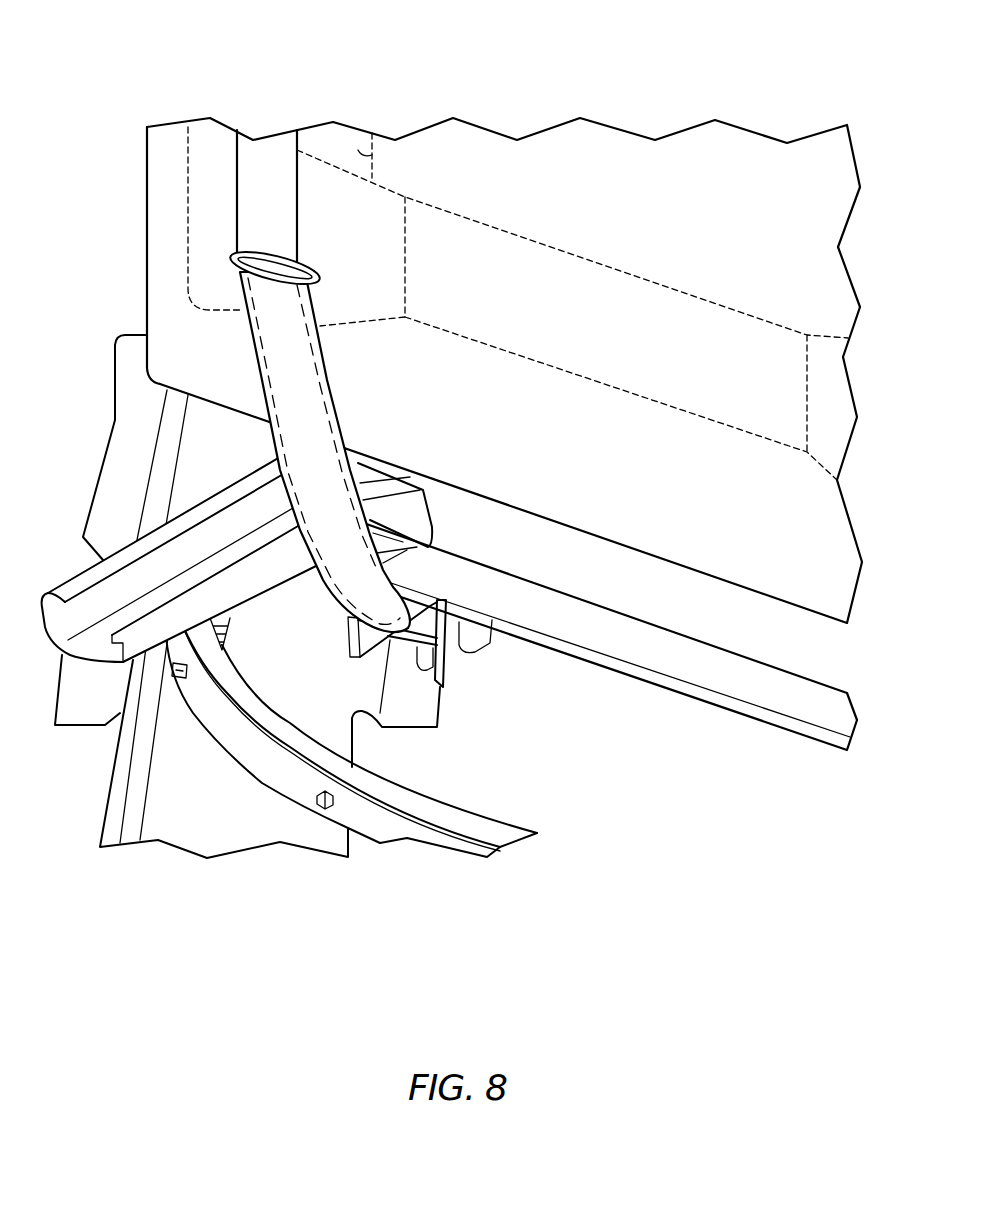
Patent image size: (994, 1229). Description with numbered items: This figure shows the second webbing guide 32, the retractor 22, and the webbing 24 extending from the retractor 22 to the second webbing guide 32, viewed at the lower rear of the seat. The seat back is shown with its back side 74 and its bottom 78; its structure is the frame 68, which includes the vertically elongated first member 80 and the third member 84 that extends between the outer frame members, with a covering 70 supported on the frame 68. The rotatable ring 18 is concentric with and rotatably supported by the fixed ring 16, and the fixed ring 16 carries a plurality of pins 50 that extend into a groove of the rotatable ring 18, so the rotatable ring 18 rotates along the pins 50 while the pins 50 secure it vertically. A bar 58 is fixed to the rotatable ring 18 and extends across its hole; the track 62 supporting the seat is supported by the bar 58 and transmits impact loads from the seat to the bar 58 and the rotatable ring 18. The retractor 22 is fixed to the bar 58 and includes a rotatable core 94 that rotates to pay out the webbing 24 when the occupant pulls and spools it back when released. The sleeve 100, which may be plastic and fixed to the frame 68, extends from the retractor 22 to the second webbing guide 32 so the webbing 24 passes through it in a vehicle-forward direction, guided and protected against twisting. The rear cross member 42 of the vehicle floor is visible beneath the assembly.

The covering 70 is at (434, 464).
The back side 74 is at (768, 227).
The frame 68 is at (562, 242).
The third member 84 is at (683, 318).
The first member 80 is at (372, 155).
The bottom 78 is at (168, 300).
The rotatable ring 18 is at (232, 683).
The fixed ring 16 is at (246, 746).
The pin 50 is at (175, 680).
The track 62 is at (70, 574).
The bar 58 is at (700, 703).
The retractor 22 is at (455, 684).
The rotatable core 94 is at (476, 645).
The rear cross member 42 is at (343, 736).
The sleeve 100 is at (343, 432).
The webbing 24 is at (273, 202).
The second webbing guide 32 is at (313, 275).